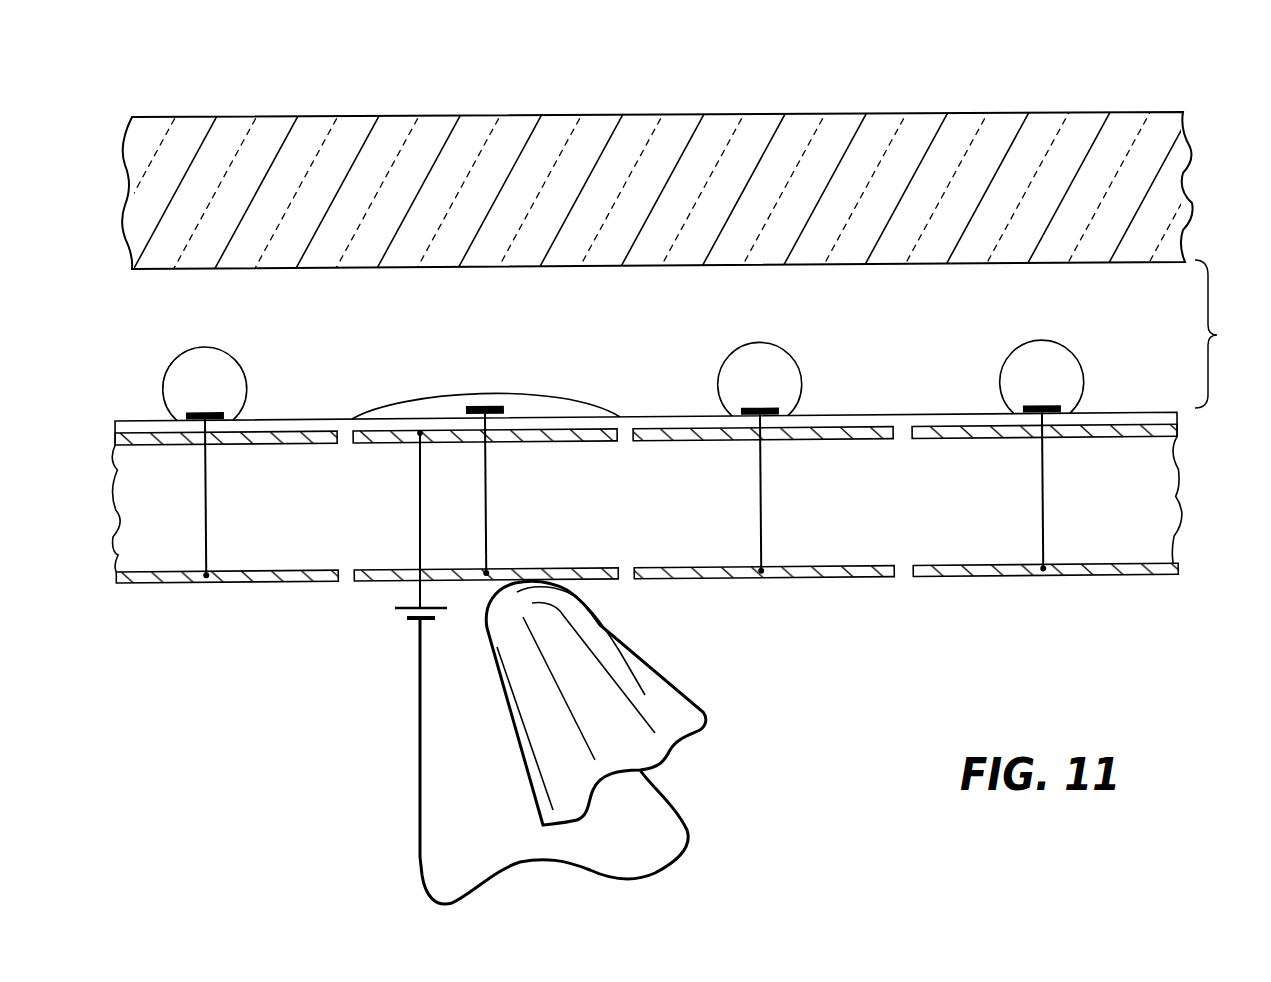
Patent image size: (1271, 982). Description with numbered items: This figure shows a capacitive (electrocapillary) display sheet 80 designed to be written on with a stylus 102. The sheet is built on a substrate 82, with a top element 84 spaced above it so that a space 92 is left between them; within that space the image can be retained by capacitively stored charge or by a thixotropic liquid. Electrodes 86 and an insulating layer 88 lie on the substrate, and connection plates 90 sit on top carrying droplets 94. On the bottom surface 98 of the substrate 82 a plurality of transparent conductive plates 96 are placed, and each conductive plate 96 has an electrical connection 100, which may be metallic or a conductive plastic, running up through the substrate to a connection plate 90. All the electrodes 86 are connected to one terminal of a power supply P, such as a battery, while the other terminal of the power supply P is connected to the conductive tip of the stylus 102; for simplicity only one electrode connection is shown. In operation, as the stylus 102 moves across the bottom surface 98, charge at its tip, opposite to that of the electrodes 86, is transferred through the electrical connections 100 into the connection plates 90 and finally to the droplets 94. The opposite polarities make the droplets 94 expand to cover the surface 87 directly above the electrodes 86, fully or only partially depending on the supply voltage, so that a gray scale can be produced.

The electronic assembly 80 is at (1042, 77).
The substrate 82 is at (1148, 485).
The top sheet 84 is at (1160, 157).
The electrodes 86 is at (663, 437).
The surface 87 is at (467, 398).
The insulating layer 88 is at (422, 423).
The connection plates 90 is at (210, 412).
The space 92 is at (1228, 334).
The droplets 94 is at (225, 360).
The conductive plates 96 is at (377, 585).
The surface 98 is at (347, 580).
The electrical connection 100 is at (208, 520).
The stylus 102 is at (677, 685).
The power supply P is at (416, 732).